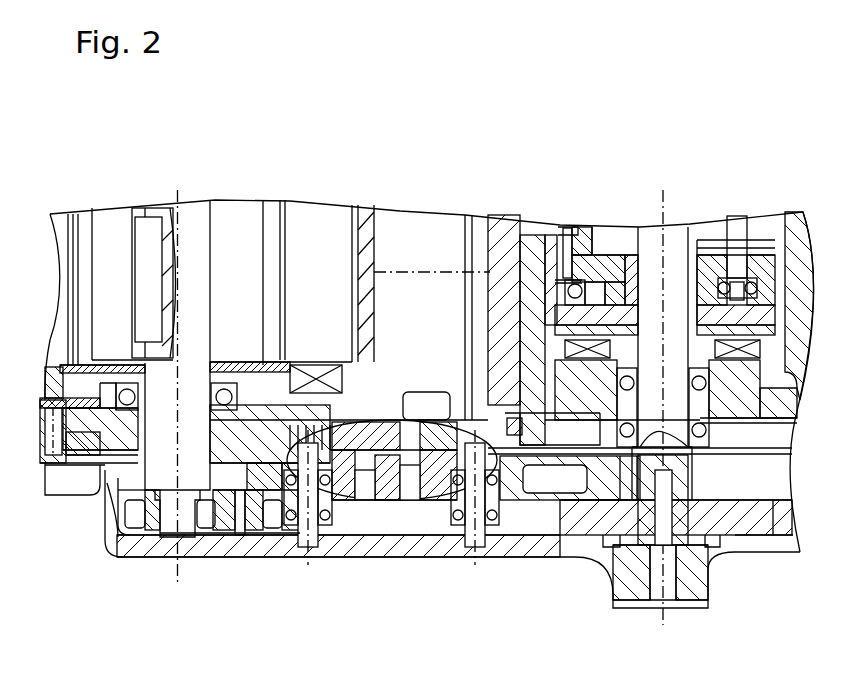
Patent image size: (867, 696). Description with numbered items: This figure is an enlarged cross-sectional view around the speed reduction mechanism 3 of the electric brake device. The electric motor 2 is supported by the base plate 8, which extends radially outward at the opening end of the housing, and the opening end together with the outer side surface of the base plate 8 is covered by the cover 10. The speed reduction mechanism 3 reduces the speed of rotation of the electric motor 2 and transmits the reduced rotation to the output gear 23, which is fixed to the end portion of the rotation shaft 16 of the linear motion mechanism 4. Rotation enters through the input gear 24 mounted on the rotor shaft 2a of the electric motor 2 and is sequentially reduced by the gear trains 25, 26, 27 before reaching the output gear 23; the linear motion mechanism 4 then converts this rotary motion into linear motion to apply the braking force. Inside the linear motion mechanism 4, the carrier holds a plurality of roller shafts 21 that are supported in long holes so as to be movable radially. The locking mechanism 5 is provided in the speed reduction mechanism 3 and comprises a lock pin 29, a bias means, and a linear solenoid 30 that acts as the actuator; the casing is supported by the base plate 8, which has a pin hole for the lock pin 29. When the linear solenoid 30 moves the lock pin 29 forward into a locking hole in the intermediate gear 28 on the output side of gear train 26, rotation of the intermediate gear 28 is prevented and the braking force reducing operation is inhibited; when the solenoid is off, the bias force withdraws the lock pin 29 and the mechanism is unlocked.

The electric motor 2 is at (245, 210).
The rotor shaft 2a is at (193, 210).
The linear solenoid 30 is at (425, 285).
The rotation shaft 16 is at (650, 233).
The roller shaft 21 is at (742, 218).
The base plate 8 is at (78, 441).
The linear motion mechanism 4 is at (784, 465).
The input gear 24 is at (145, 530).
The gear train 25 is at (227, 552).
The intermediate gear 28 is at (300, 497).
The gear train 26 is at (382, 506).
The locking mechanism 5 is at (395, 507).
The lock pin 29 is at (415, 500).
The speed reduction mechanism 3 is at (337, 594).
The gear train 27 is at (545, 538).
The output gear 23 is at (747, 518).
The cover 10 is at (713, 573).